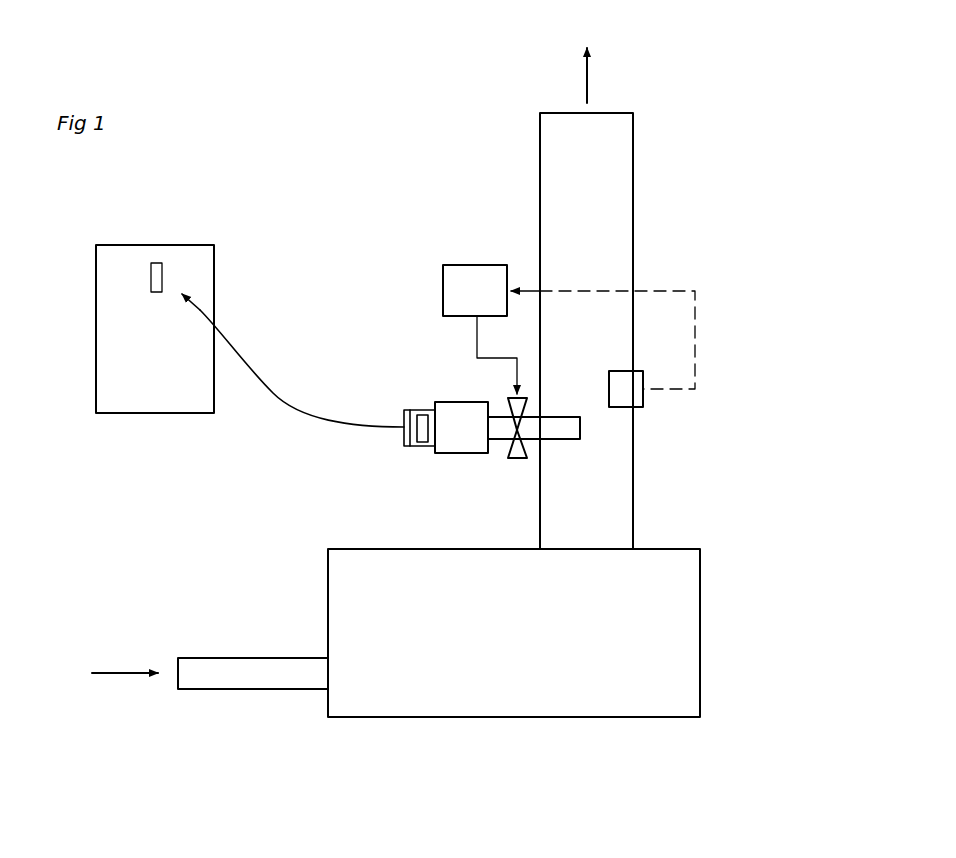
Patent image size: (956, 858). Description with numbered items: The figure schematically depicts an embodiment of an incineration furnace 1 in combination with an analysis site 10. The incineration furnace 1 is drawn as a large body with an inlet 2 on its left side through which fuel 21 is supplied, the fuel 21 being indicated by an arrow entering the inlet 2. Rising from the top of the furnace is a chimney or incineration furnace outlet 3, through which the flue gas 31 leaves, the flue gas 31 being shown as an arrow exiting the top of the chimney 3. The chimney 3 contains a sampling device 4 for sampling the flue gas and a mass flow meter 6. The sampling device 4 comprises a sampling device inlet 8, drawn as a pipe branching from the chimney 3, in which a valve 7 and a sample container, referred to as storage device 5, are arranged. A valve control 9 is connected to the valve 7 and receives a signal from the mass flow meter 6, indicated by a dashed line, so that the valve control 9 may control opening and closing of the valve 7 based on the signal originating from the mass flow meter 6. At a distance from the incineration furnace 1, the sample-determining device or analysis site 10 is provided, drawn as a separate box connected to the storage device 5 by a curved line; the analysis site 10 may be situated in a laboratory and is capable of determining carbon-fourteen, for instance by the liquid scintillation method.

The incineration furnace 1 is at (482, 726).
The inlet 2 is at (207, 672).
The fuel 21 is at (124, 676).
The chimney or incineration furnace outlet 3 is at (557, 158).
The flue gas 31 is at (590, 72).
The sampling device 4 is at (459, 393).
The storage device 5 is at (418, 446).
The mass flow meter 6 is at (632, 398).
The valve 7 is at (513, 451).
The sampling device inlet 8 is at (558, 432).
The valve control 9 is at (471, 286).
The analysis site 10 is at (108, 394).